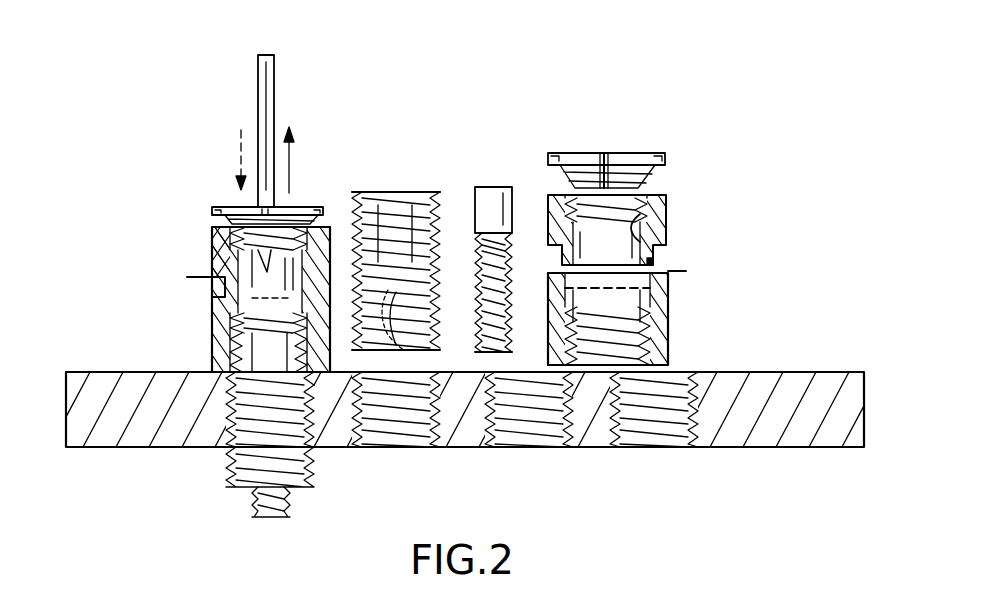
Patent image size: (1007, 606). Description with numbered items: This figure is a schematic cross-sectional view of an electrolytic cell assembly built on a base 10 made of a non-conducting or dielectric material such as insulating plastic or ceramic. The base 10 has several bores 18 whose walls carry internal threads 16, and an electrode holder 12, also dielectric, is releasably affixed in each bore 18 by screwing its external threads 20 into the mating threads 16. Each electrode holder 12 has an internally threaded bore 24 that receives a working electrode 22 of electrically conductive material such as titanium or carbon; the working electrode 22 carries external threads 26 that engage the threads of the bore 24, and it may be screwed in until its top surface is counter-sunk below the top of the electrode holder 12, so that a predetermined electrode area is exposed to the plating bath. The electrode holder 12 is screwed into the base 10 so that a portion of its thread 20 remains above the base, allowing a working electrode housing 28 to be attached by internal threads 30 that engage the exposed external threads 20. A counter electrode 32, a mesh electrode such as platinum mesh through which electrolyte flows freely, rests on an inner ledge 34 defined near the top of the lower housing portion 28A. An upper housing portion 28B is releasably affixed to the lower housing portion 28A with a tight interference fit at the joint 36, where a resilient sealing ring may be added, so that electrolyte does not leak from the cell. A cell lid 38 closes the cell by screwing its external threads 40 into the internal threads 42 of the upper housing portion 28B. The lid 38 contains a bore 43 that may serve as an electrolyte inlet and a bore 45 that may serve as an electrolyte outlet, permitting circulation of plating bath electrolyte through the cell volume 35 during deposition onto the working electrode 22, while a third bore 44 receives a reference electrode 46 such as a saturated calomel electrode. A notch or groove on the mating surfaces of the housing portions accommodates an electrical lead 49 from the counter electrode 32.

The base 10 is at (70, 372).
The electrode holder 12 is at (383, 205).
The threads 16 is at (414, 424).
The bore 18 is at (392, 418).
The external threads 20 is at (442, 200).
The working electrode 22 is at (492, 183).
The internally threaded bore 24 is at (396, 322).
The external threads 26 is at (512, 298).
The working electrode housing 28 is at (220, 320).
The lower housing portion 28A is at (668, 350).
The upper housing portion 28B is at (668, 218).
The internal threads 30 is at (250, 268).
The counter electrode 32 is at (283, 257).
The inner ledge 34 is at (668, 314).
The cell volume 35 is at (222, 242).
The joint 36 is at (330, 222).
The cell lid 38 is at (233, 210).
The external threads 40 is at (656, 185).
The internal threads 42 is at (664, 238).
The bore 43 is at (590, 158).
The third bore 44 is at (606, 162).
The bore 45 is at (614, 158).
The reference electrode 46 is at (274, 92).
The electrical lead 49 is at (188, 277).